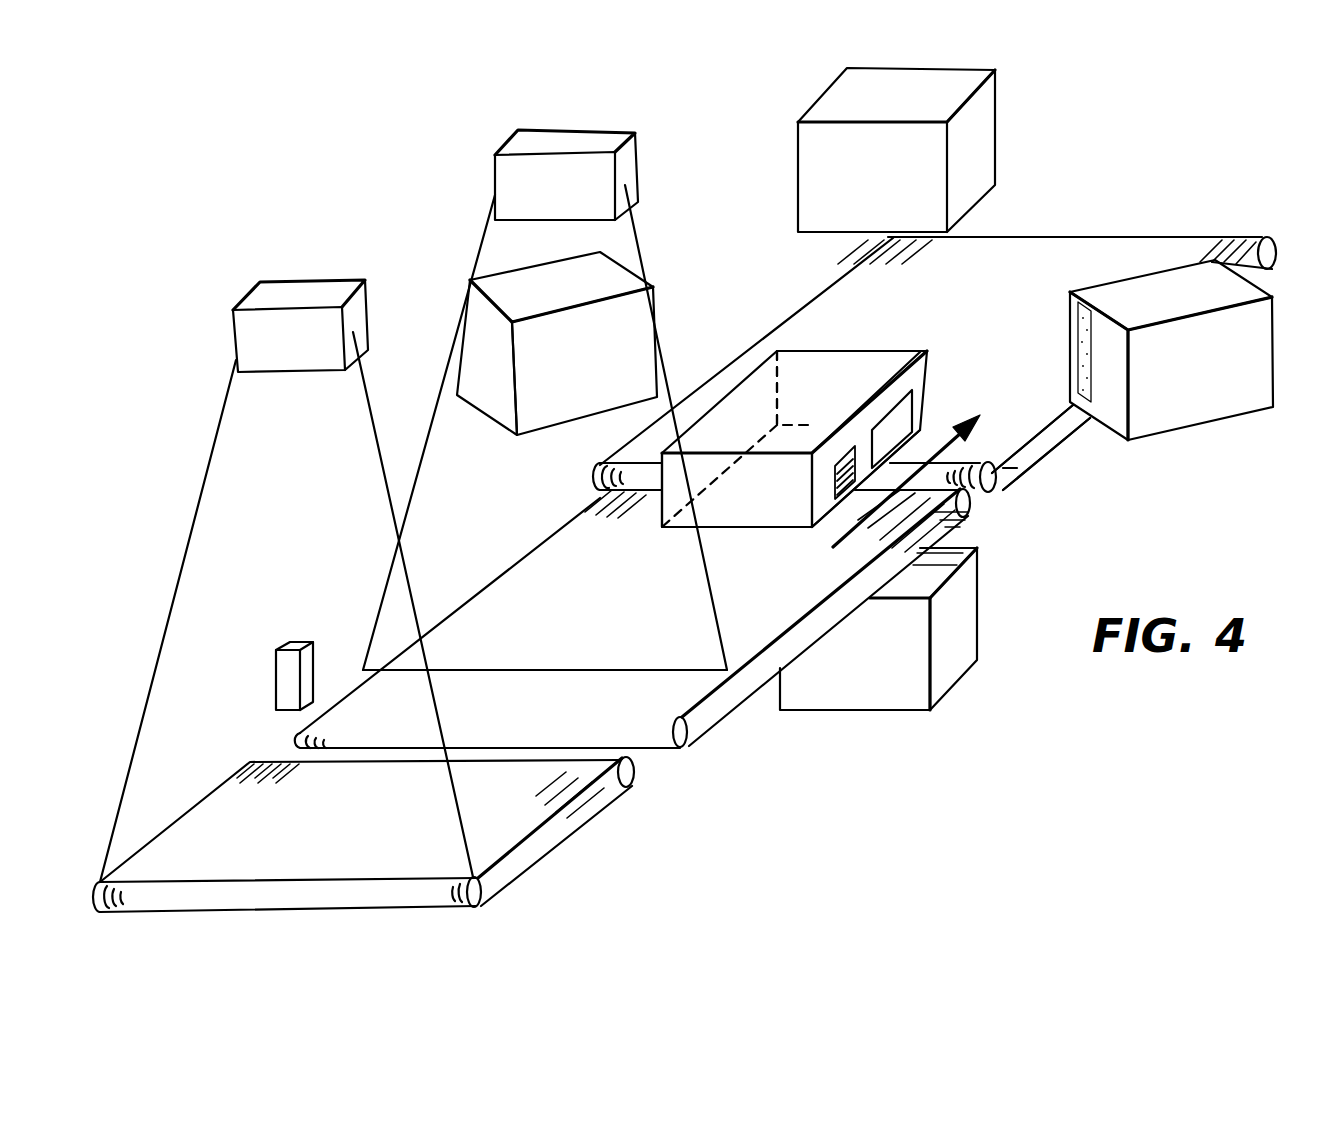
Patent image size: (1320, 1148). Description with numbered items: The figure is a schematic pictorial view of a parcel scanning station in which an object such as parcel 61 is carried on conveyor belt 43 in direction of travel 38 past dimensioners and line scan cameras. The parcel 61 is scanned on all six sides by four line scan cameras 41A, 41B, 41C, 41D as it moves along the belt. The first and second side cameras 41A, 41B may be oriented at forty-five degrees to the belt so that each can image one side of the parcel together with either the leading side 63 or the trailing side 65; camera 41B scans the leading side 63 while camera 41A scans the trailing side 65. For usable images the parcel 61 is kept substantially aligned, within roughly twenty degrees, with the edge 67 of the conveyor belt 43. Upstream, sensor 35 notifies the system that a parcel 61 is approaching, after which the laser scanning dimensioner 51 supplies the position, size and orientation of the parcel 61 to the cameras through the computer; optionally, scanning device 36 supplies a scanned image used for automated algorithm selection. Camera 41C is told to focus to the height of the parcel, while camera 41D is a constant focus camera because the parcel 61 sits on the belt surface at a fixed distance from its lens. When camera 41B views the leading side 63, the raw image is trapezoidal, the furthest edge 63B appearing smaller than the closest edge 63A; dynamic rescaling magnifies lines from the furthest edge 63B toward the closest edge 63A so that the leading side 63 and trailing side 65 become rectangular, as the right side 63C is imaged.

The sensor 35 is at (292, 660).
The scanning device 36 is at (286, 581).
The direction of travel 38 is at (963, 442).
The first side line scan camera 41A is at (557, 343).
The second side line scan camera 41B is at (1171, 350).
The line scan camera 41C is at (896, 150).
The line scan camera 41D is at (878, 629).
The conveyor belt 43 is at (934, 364).
The laser scanning dimensioner 51 is at (545, 400).
The parcel 61 is at (832, 411).
The leading side 63 is at (856, 350).
The closest edge 63A is at (925, 380).
The furthest edge 63B is at (780, 375).
The right side 63C is at (876, 421).
The trailing side 65 is at (737, 490).
The edge of the conveyor belt 67 is at (1025, 440).